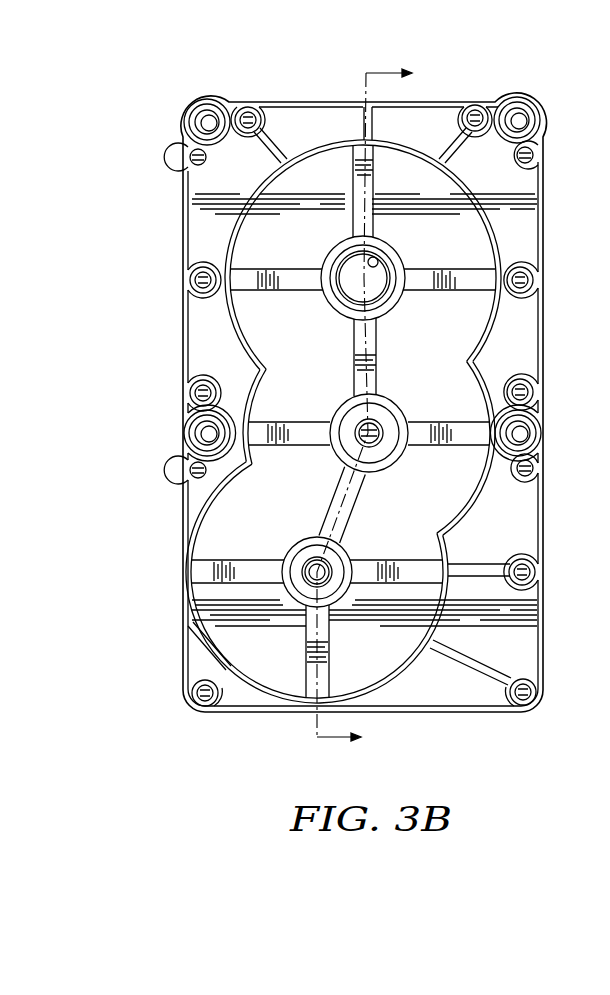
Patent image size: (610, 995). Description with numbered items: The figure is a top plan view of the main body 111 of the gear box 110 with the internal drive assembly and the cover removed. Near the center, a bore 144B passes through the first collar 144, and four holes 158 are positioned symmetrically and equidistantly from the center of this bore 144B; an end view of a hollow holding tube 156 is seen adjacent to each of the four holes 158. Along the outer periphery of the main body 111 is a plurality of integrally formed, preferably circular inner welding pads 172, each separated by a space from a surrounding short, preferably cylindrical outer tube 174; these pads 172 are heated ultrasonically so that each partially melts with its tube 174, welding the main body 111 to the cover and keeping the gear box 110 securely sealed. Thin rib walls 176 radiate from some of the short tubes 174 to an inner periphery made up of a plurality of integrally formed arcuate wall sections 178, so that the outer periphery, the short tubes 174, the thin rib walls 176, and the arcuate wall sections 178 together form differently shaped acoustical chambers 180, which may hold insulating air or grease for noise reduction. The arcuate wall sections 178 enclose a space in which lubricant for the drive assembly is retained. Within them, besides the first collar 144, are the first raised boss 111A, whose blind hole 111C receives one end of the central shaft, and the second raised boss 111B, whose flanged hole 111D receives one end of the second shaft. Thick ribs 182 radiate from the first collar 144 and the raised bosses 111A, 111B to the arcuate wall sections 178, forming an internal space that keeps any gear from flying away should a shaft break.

The gear box 110 is at (108, 622).
The main body 111 is at (276, 714).
The first raised boss 111A is at (387, 395).
The second raised boss 111B is at (345, 545).
The blind hole 111C is at (378, 425).
The flanged hole 111D is at (330, 563).
The first collar 144 is at (340, 308).
The bore 144B is at (373, 265).
The hollow holding tubes 156 is at (196, 157).
The holes 158 is at (202, 122).
The inner welding pads 172 is at (246, 108).
The short outer tubes 174 is at (266, 108).
The thin rib walls 176 is at (357, 118).
The arcuate wall sections 178 is at (283, 166).
The acoustical chambers 180 is at (335, 110).
The thick ribs 182 is at (296, 268).